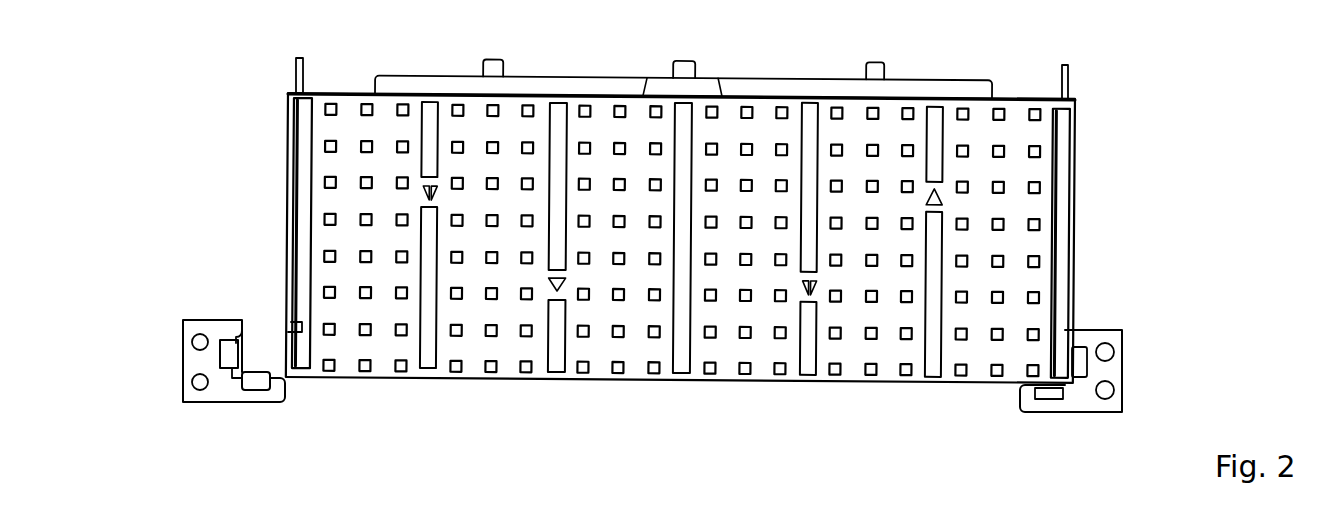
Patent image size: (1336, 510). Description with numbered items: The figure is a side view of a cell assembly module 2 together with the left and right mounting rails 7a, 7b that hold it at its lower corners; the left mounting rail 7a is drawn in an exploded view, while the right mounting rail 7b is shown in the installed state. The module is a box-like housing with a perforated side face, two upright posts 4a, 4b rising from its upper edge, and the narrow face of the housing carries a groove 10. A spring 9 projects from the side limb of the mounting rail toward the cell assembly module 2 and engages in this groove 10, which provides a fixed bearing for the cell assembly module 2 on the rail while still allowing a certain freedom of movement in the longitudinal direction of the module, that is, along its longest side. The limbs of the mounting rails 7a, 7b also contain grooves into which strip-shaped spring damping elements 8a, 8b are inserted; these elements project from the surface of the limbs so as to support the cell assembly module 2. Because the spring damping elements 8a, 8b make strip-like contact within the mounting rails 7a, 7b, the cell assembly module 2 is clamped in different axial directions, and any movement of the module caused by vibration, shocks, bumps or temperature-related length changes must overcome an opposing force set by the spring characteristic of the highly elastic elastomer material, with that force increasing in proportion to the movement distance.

The cell assembly module 2 is at (750, 386).
The left guide post 4a is at (294, 64).
The right guide post 4b is at (1076, 72).
The left mounting rail 7a is at (199, 408).
The right mounting rail 7b is at (1077, 414).
The spring damping element 8a is at (258, 391).
The spring damping element 8b is at (218, 340).
The spring 9 is at (238, 318).
The groove 10 is at (291, 320).